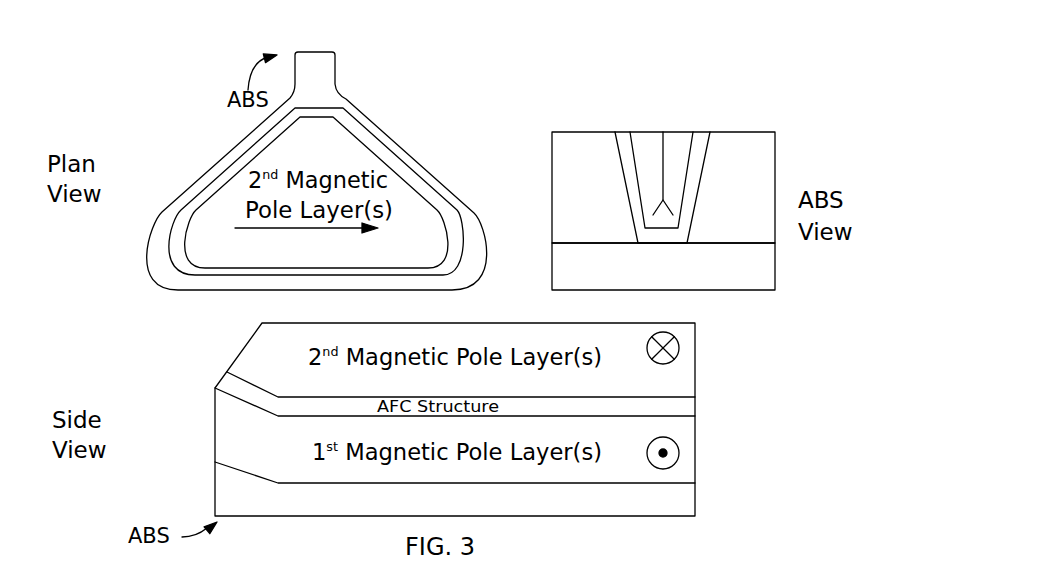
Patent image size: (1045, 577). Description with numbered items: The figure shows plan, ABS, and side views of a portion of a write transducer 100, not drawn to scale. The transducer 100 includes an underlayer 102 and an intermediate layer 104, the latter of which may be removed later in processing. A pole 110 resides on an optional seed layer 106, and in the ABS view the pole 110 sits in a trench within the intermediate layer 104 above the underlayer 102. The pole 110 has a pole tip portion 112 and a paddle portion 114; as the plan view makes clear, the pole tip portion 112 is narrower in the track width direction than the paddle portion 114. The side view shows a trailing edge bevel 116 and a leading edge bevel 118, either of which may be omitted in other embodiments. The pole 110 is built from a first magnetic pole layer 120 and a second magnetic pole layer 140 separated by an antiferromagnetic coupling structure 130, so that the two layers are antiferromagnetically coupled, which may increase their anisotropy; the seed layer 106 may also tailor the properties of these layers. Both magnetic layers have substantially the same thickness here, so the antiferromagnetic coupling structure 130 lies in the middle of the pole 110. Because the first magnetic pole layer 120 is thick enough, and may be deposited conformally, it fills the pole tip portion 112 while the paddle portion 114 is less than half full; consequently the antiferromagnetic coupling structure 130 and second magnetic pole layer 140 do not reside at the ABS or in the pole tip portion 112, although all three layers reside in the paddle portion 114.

The write transducer 100 is at (140, 62).
The pole 110 is at (172, 130).
The pole tip portion 112 is at (358, 80).
The paddle portion 114 is at (456, 177).
The trailing edge bevel 116 is at (228, 491).
The leading edge bevel 118 is at (215, 350).
The first magnetic pole layer 120 is at (188, 192).
The antiferromagnetic coupling (AFC) structure 130 is at (465, 250).
The second magnetic pole layer 140 is at (372, 150).
The underlayer 102 is at (777, 259).
The intermediate layer 104 is at (777, 162).
The seed layer 106 is at (617, 150).